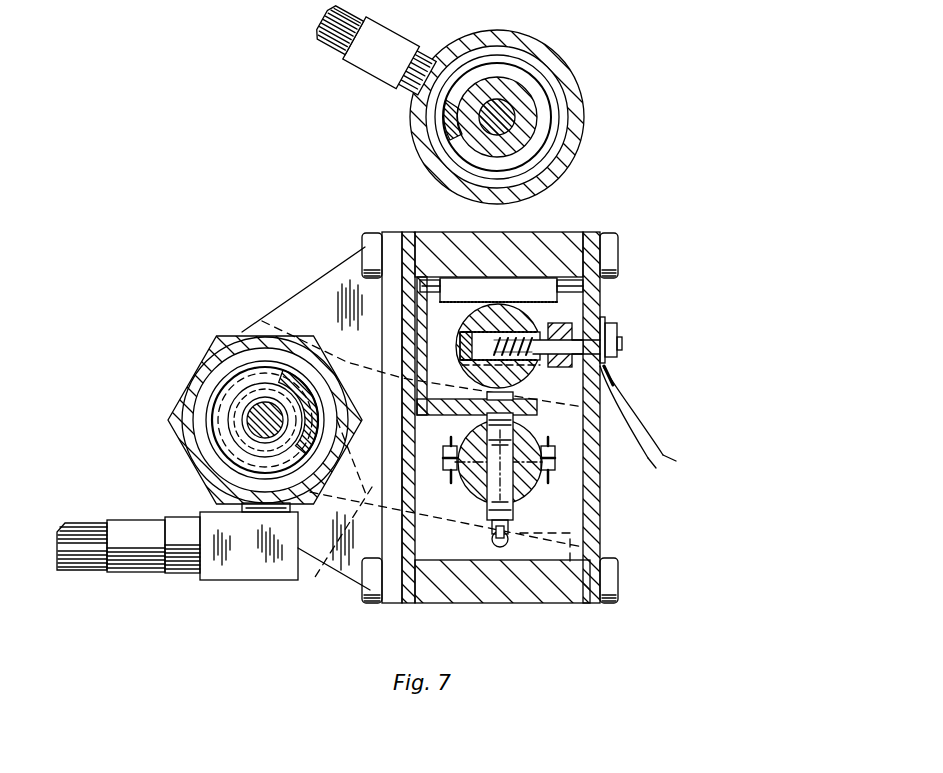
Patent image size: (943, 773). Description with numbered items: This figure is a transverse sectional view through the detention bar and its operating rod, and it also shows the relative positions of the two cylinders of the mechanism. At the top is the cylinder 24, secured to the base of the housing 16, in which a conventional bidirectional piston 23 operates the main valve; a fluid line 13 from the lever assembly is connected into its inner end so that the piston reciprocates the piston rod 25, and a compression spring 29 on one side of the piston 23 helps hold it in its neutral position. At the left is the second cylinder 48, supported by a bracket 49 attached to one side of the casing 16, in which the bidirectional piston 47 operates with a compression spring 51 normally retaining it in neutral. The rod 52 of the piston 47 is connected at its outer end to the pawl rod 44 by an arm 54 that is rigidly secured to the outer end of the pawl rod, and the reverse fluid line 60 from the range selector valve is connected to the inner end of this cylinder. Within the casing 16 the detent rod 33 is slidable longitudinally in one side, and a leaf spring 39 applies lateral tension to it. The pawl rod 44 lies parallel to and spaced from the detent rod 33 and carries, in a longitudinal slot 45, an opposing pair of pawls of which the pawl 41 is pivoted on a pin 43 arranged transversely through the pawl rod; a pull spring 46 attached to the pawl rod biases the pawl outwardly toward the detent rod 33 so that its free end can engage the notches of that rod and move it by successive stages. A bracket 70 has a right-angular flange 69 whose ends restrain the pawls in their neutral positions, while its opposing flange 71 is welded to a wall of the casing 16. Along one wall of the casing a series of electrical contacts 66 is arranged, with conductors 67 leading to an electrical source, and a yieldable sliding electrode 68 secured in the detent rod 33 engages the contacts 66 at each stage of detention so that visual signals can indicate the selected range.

The fluid line 13 is at (338, 43).
The housing 16 is at (595, 302).
The bidirectional piston 23 is at (545, 135).
The cylinder 24 is at (542, 52).
The piston rod 25 is at (470, 128).
The compression spring 29 is at (548, 100).
The detent rod 33 is at (466, 326).
The leaf spring 39 is at (505, 292).
The pawl 41 is at (505, 490).
The pin 43 is at (550, 472).
The pawl rod 44 is at (472, 434).
The longitudinal slot 45 is at (490, 495).
The pull spring 46 is at (492, 540).
The bidirectional piston 47 is at (280, 382).
The cylinder 48 is at (200, 378).
The bracket 49 is at (324, 286).
The compression spring 51 is at (210, 467).
The piston rod 52 is at (250, 418).
The arm 54 is at (269, 557).
The reverse fluid line 60 is at (83, 565).
The electrical contacts 66 is at (624, 344).
The conductors 67 is at (640, 438).
The sliding electrode 68 is at (574, 360).
The right-angular flange 69 is at (540, 410).
The bracket 70 is at (428, 432).
The opposing flange 71 is at (420, 382).